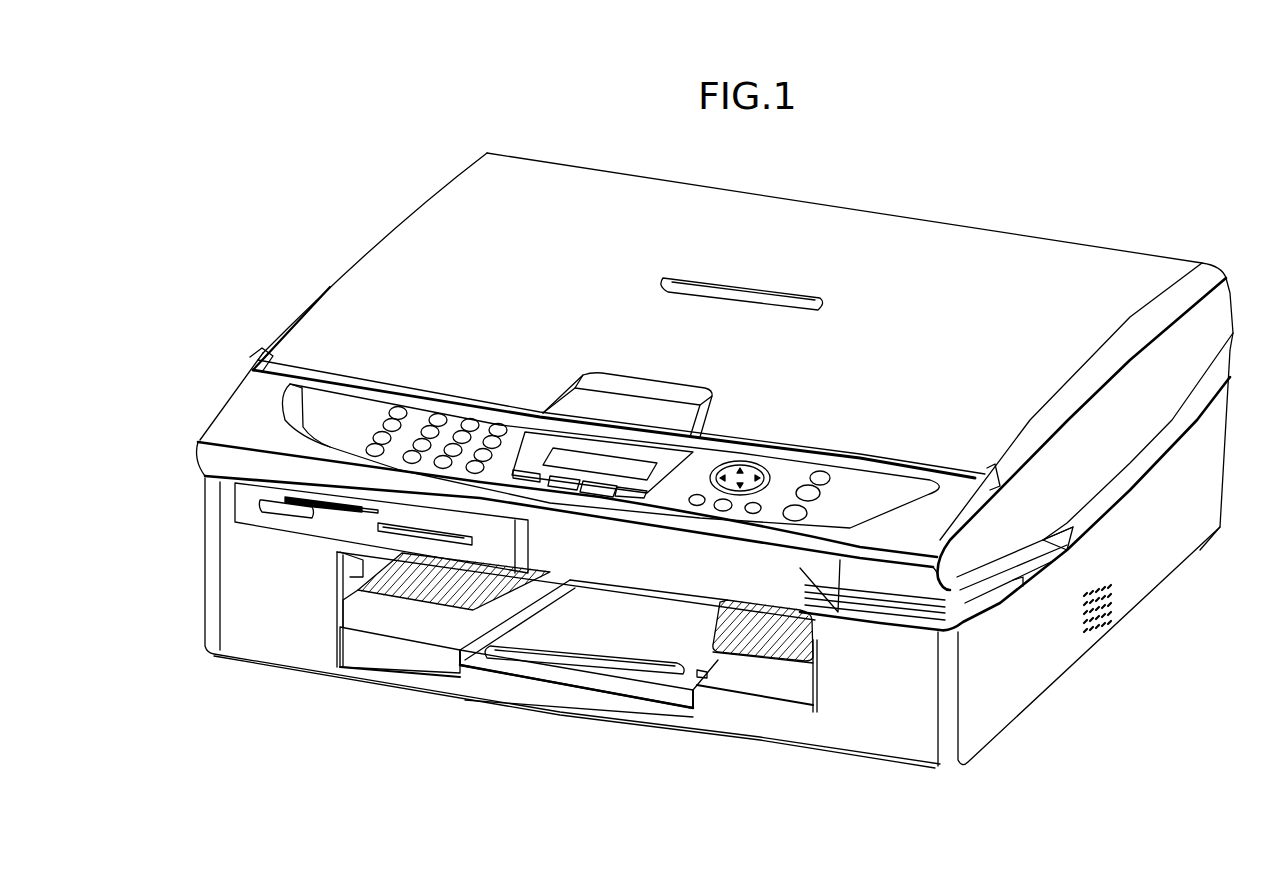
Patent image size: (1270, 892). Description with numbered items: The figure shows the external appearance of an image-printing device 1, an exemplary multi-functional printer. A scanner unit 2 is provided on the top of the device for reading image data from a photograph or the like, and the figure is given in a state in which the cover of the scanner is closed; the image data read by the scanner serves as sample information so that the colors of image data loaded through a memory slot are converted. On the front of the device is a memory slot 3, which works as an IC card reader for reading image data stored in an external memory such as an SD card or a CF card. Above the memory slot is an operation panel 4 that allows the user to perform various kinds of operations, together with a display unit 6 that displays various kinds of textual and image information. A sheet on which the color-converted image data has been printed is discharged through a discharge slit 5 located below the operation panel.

The image-printing device 1 is at (878, 197).
The scanner unit 2 is at (587, 199).
The memory slot 3 is at (287, 515).
The operation panel 4 is at (279, 423).
The discharge slit 5 is at (663, 642).
The display unit 6 is at (640, 462).